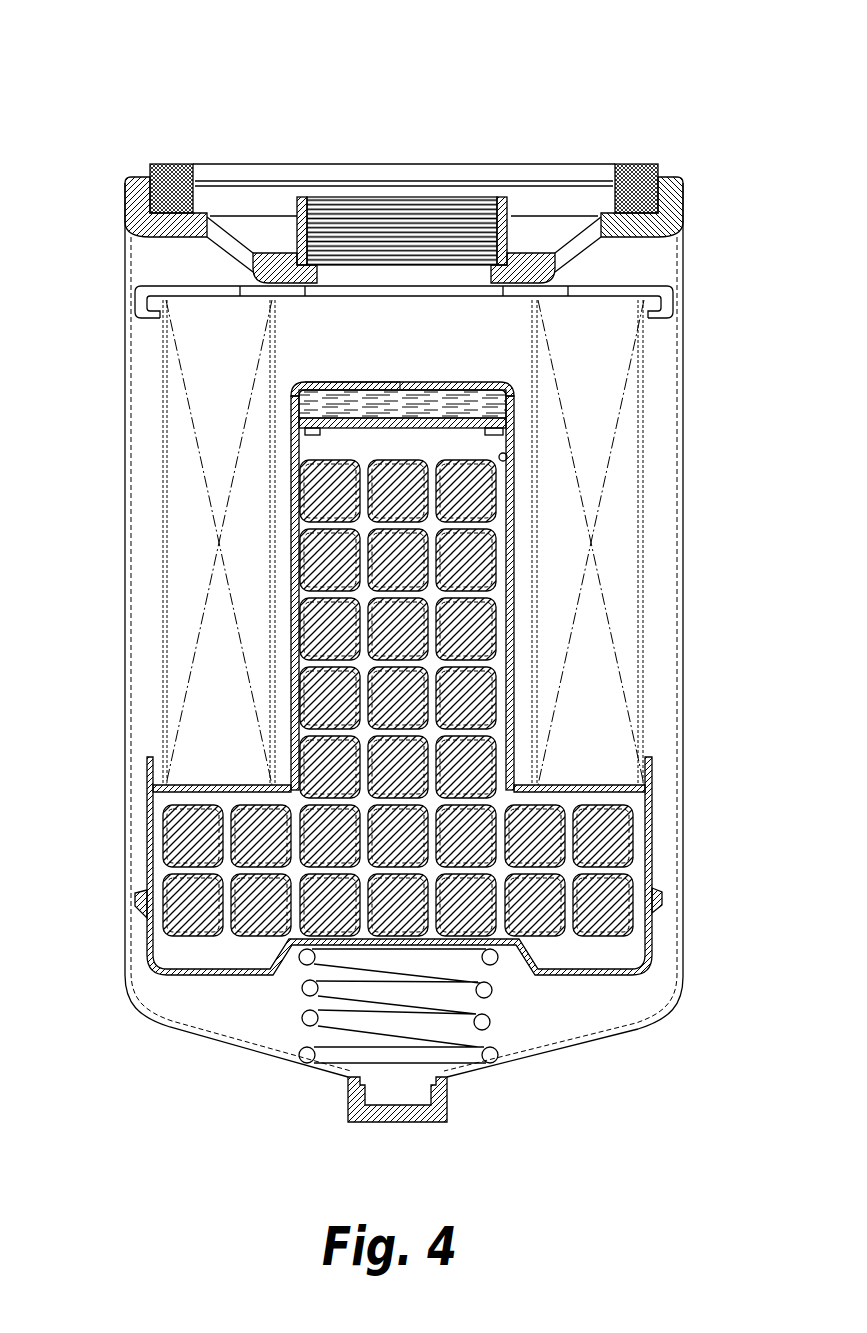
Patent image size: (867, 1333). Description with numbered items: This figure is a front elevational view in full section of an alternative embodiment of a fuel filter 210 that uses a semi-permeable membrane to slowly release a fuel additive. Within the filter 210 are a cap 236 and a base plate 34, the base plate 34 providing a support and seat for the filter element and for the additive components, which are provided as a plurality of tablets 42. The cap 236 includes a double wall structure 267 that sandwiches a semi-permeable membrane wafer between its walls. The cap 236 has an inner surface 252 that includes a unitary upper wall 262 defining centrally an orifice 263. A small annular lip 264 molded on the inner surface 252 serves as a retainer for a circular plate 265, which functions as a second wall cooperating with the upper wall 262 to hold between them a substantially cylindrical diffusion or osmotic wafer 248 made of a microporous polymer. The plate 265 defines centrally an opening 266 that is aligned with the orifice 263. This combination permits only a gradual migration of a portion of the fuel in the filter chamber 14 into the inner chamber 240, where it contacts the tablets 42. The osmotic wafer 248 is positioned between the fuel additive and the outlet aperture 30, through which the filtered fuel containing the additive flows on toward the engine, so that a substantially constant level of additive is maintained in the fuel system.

The filter 210 is at (147, 98).
The filter chamber 14 is at (157, 256).
The outlet aperture 30 is at (402, 245).
The double wall structure 267 is at (480, 346).
The orifice 263 is at (396, 381).
The upper wall 262 is at (474, 382).
The diffusion wafer 248 is at (492, 410).
The annular lip 264 is at (303, 430).
The circular plate 265 is at (504, 437).
The opening 266 is at (400, 428).
The inner surface 252 is at (506, 460).
The cap 236 is at (510, 582).
The inner chamber 240 is at (300, 663).
The tablets 42 is at (495, 698).
The base plate 34 is at (650, 943).